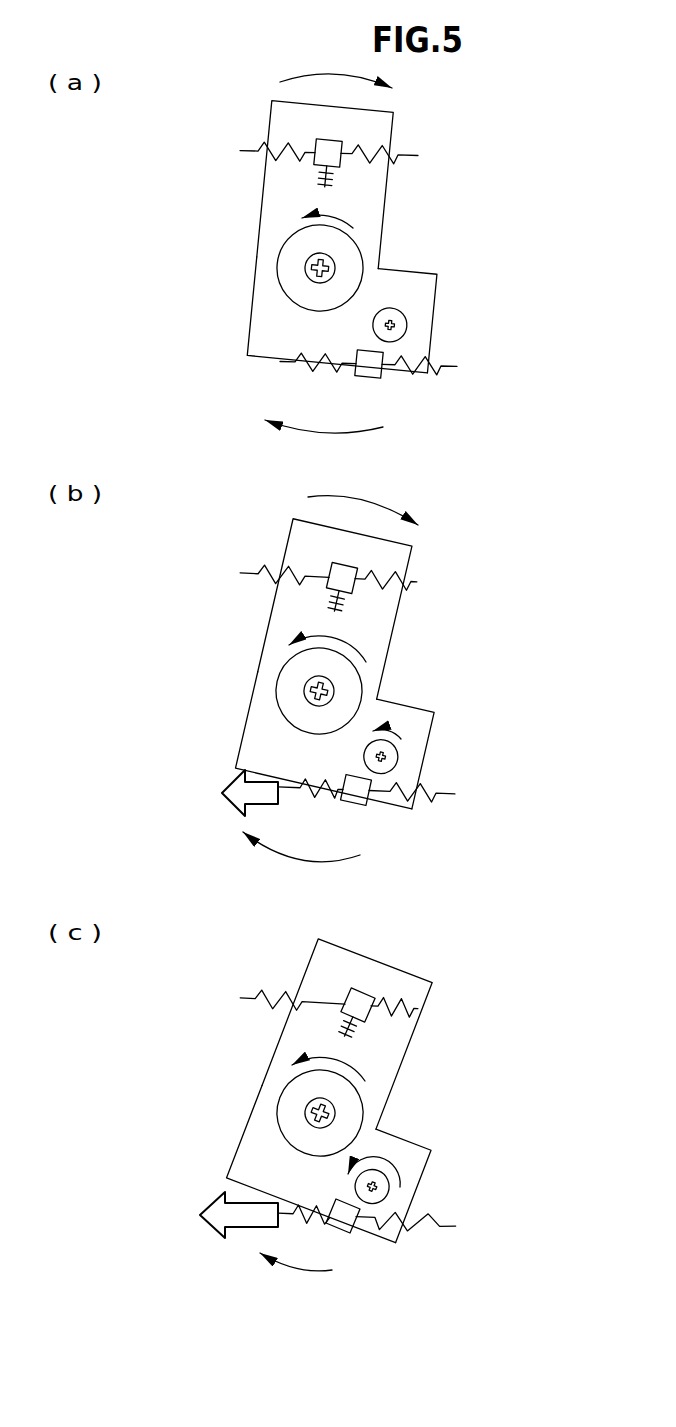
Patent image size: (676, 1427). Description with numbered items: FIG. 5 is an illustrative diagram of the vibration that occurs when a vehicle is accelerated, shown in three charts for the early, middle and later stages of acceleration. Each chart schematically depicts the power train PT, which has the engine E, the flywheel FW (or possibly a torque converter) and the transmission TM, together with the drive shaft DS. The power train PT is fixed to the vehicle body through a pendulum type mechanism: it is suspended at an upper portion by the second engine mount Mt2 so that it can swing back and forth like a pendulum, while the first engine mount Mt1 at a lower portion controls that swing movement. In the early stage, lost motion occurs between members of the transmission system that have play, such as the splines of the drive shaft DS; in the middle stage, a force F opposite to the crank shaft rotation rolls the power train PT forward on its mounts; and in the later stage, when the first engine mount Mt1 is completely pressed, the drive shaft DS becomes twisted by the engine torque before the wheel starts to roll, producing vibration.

The power train PT is at (373, 669).
The engine E is at (278, 128).
The transmission TM is at (400, 282).
The flywheel FW is at (302, 297).
The drive shaft DS is at (402, 322).
The first engine mount Mt1 is at (449, 383).
The second engine mount Mt2 is at (302, 168).
The force F is at (239, 1004).